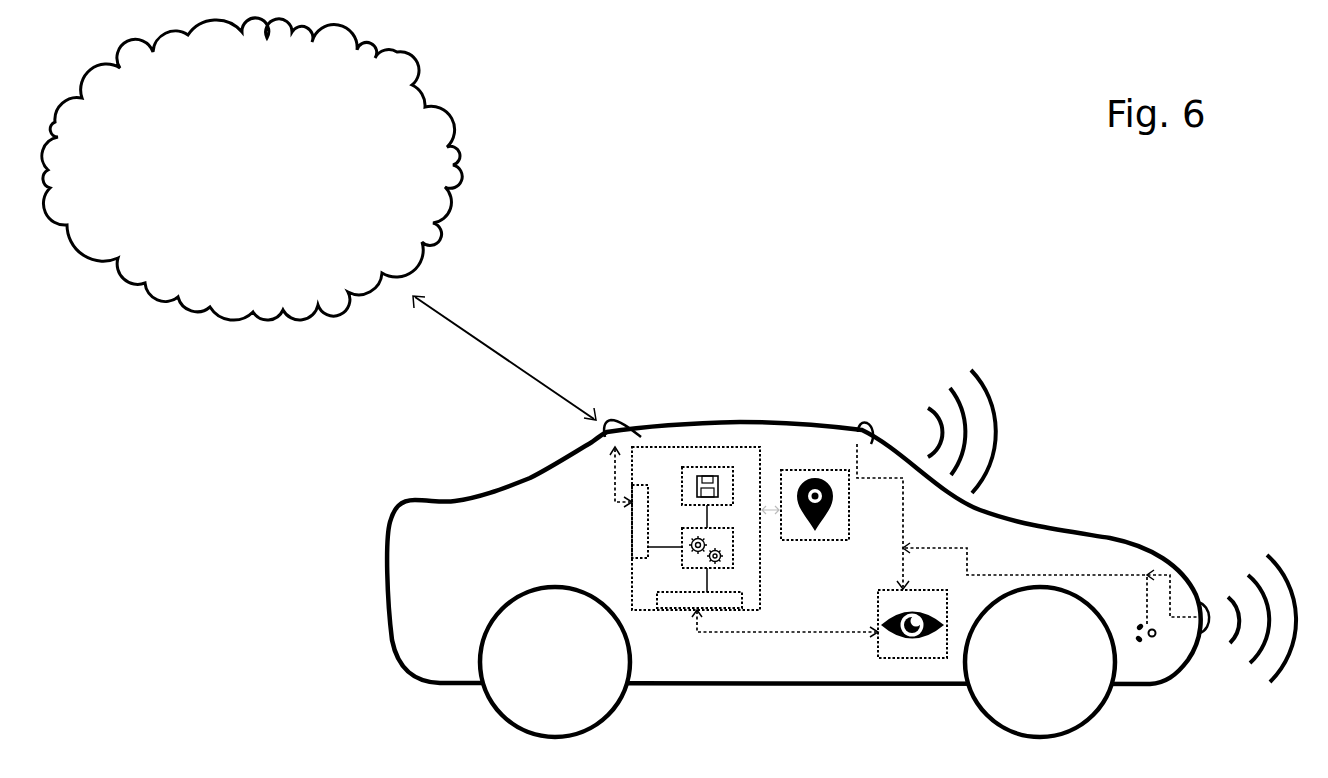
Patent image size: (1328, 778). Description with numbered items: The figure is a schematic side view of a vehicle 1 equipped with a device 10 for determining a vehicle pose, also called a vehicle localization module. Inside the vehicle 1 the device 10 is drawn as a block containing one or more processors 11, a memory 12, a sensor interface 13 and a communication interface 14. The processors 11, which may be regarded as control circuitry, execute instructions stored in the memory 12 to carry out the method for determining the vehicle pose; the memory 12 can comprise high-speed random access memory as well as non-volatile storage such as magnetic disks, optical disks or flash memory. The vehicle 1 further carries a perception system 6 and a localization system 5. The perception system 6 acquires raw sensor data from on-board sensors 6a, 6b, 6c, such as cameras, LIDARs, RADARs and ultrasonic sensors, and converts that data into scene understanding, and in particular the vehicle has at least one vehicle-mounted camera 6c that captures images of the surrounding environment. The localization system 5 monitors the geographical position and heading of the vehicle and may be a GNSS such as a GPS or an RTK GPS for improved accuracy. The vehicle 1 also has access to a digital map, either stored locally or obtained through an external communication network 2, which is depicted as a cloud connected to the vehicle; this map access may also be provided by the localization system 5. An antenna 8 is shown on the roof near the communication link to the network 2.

The vehicle 1 is at (405, 687).
The external communication network 2 is at (398, 53).
The localization system 5 is at (791, 470).
The perception system 6 is at (923, 660).
The sensor 6a is at (1150, 637).
The sensor 6b is at (1208, 601).
The vehicle-mounted camera 6c is at (863, 427).
The communication antenna 8 is at (609, 428).
The device for determining a vehicle pose 10 is at (698, 446).
The processor 11 is at (730, 547).
The memory 12 is at (708, 466).
The sensor interface 13 is at (683, 604).
The communication interface 14 is at (638, 532).